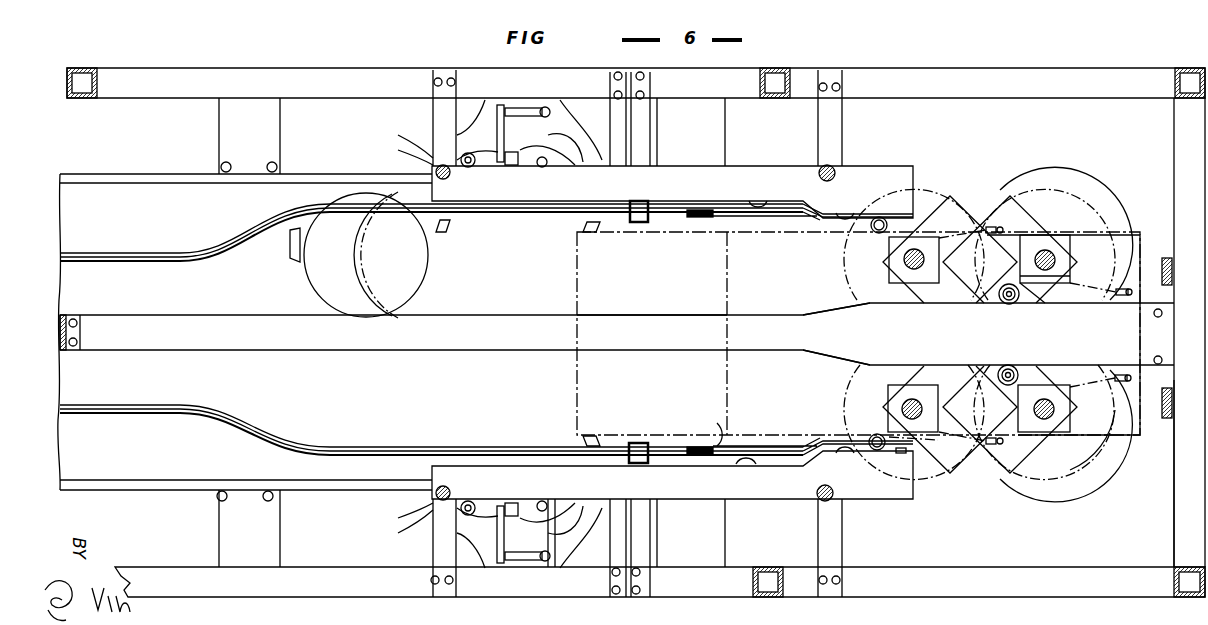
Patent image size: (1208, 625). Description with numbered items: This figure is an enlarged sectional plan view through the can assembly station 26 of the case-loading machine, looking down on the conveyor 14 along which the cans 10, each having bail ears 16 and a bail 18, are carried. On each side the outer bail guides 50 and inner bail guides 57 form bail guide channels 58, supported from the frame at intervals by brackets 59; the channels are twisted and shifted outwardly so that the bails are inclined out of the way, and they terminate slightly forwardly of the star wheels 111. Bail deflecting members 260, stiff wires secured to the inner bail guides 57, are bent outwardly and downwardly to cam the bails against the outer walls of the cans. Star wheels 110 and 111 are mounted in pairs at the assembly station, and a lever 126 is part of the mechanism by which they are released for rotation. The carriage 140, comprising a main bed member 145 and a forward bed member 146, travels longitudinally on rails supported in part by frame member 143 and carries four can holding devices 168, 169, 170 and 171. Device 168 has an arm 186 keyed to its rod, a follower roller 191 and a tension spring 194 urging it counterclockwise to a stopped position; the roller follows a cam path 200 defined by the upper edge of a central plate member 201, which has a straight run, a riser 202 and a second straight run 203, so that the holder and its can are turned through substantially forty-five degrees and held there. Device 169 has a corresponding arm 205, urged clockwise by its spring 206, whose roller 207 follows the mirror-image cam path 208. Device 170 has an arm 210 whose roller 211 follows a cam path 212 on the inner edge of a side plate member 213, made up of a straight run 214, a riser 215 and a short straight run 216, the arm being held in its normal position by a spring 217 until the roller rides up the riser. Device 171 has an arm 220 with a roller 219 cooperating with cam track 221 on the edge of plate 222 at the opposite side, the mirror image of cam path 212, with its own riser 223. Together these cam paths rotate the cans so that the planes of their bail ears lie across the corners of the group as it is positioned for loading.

The can 10 is at (437, 274).
The conveyor 14 is at (113, 195).
The bail ear 16 is at (438, 258).
The bail 18 is at (442, 245).
The can assembly station 26 is at (560, 114).
The outer bail guide 50 is at (88, 253).
The inner bail guide 57 is at (88, 263).
The bail guide channel 58 is at (130, 254).
The bracket 59 is at (619, 79).
The star wheel 110 is at (473, 130).
The star wheel 111 is at (585, 147).
The lever 126 is at (504, 136).
The carriage 140 is at (572, 384).
The frame member 143 is at (1174, 516).
The main bed member 145 is at (577, 405).
The forward bed member 146 is at (1112, 440).
The can holding device 168 is at (1049, 229).
The can holding device 169 is at (1044, 432).
The can holding device 170 is at (922, 446).
The can holding device 171 is at (916, 226).
The arm 186 is at (1024, 291).
The follower roller 191 is at (1002, 302).
The tension spring 194 is at (1121, 298).
The cam path 200 is at (786, 313).
The plate member 201 is at (742, 332).
The riser 202 is at (832, 312).
The second straight run 203 is at (925, 305).
The arm 205 is at (1030, 384).
The spring 206 is at (1120, 376).
The roller 207 is at (1002, 367).
The cam path 208 is at (782, 352).
The arm 210 is at (874, 424).
The roller 211 is at (868, 451).
The cam path 212 is at (717, 434).
The plate member 213 is at (782, 499).
The straight run 214 is at (768, 464).
The riser 215 is at (840, 447).
The short straight run 216 is at (901, 454).
The spring 217 is at (990, 450).
The roller 219 is at (870, 235).
The arm 220 is at (882, 250).
The cam track 221 is at (756, 204).
The plate 222 is at (760, 166).
The riser 223 is at (843, 209).
The bail deflecting member 260 is at (778, 219).